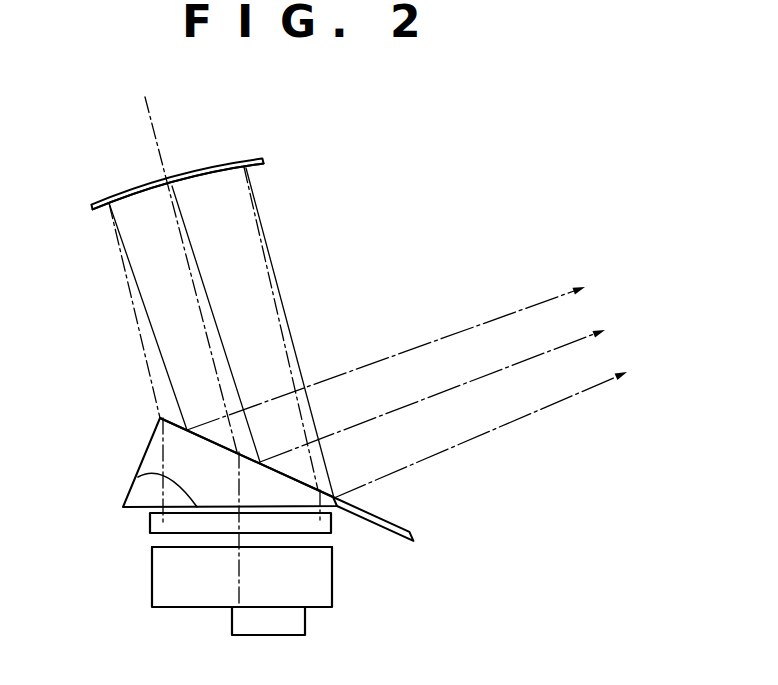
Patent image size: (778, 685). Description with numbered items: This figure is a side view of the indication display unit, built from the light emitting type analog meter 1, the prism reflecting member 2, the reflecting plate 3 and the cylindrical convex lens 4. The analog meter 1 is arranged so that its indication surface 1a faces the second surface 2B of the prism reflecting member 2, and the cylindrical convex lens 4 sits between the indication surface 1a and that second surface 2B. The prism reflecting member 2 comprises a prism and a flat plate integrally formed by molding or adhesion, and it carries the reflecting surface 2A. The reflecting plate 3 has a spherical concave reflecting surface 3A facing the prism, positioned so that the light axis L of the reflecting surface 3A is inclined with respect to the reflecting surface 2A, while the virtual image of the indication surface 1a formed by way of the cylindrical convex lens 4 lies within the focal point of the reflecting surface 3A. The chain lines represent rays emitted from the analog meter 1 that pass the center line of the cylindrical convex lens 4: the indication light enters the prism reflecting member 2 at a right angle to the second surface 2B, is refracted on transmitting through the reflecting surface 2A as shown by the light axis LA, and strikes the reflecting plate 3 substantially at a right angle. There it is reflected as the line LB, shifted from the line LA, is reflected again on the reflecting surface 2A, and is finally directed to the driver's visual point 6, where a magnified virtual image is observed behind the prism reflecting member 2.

The light emitting type analog meter 1 is at (326, 558).
The indication surface 1a is at (167, 543).
The prism reflecting member 2 is at (152, 448).
The reflecting surface 2A is at (168, 418).
The second surface 2B is at (138, 477).
The reflecting plate 3 is at (241, 161).
The reflecting surface 3A is at (251, 172).
The cylindrical convex lens 4 is at (155, 523).
The visual point of the driver 6 is at (625, 260).
The light axis L is at (154, 127).
The light axis LA is at (199, 308).
The line LB is at (228, 358).